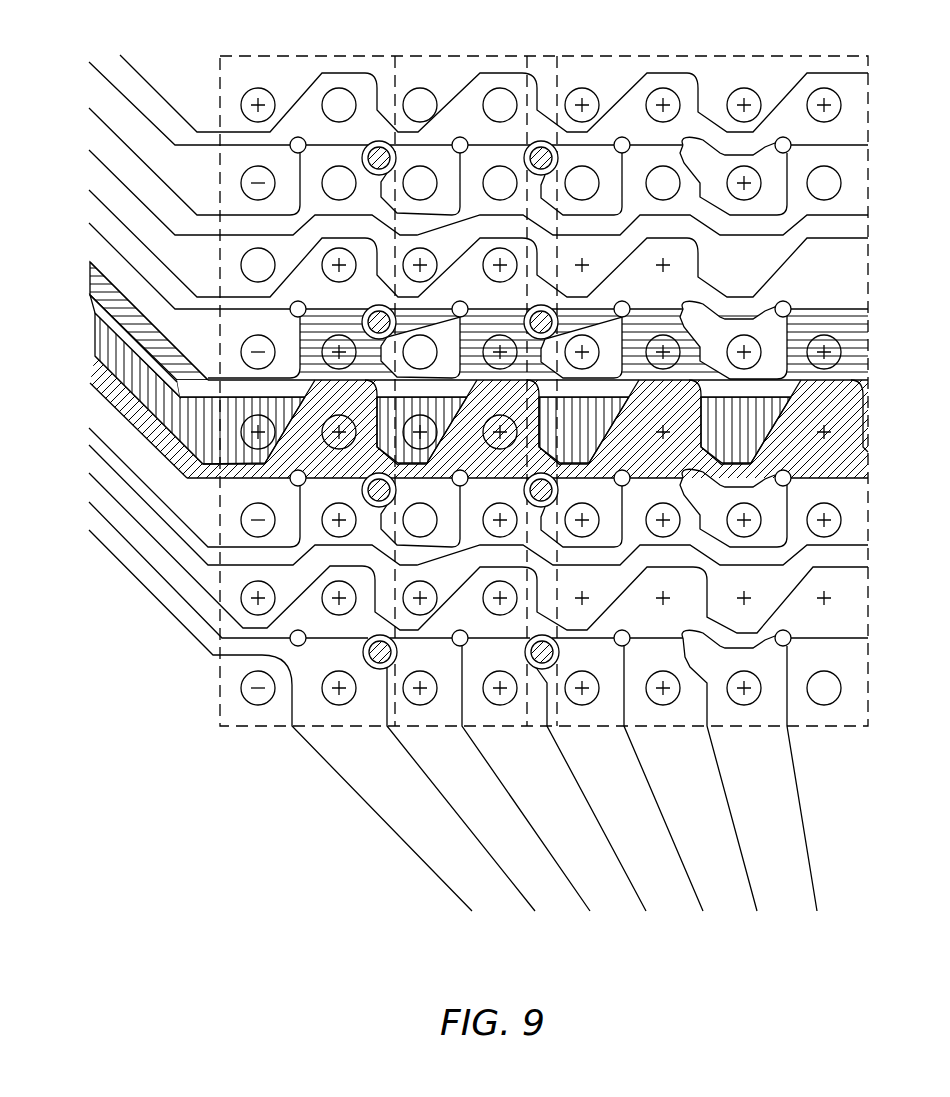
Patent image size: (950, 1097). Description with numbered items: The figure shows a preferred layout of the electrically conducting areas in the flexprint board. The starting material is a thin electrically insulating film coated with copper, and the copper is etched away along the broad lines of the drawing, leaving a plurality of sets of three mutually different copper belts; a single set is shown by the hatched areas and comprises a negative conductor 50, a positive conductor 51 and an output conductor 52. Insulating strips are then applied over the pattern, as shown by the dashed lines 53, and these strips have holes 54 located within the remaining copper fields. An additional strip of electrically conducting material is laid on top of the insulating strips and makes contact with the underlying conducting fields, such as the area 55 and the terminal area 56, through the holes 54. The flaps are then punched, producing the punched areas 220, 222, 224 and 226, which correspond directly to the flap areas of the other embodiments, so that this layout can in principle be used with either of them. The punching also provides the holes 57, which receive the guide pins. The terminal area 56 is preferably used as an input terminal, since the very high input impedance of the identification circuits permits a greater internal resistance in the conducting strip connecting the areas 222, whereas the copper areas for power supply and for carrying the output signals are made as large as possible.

The negative conductor 50 is at (97, 381).
The positive conductor 51 is at (97, 332).
The output conductor 52 is at (92, 288).
The insulating strips 53 is at (385, 60).
The holes 54 is at (368, 145).
The area 55 is at (452, 300).
The terminal area 56 is at (608, 886).
The holes 57 is at (479, 130).
The punched area 220 is at (452, 345).
The punched area 222 is at (393, 305).
The punched area 224 is at (500, 456).
The punched area 226 is at (395, 489).